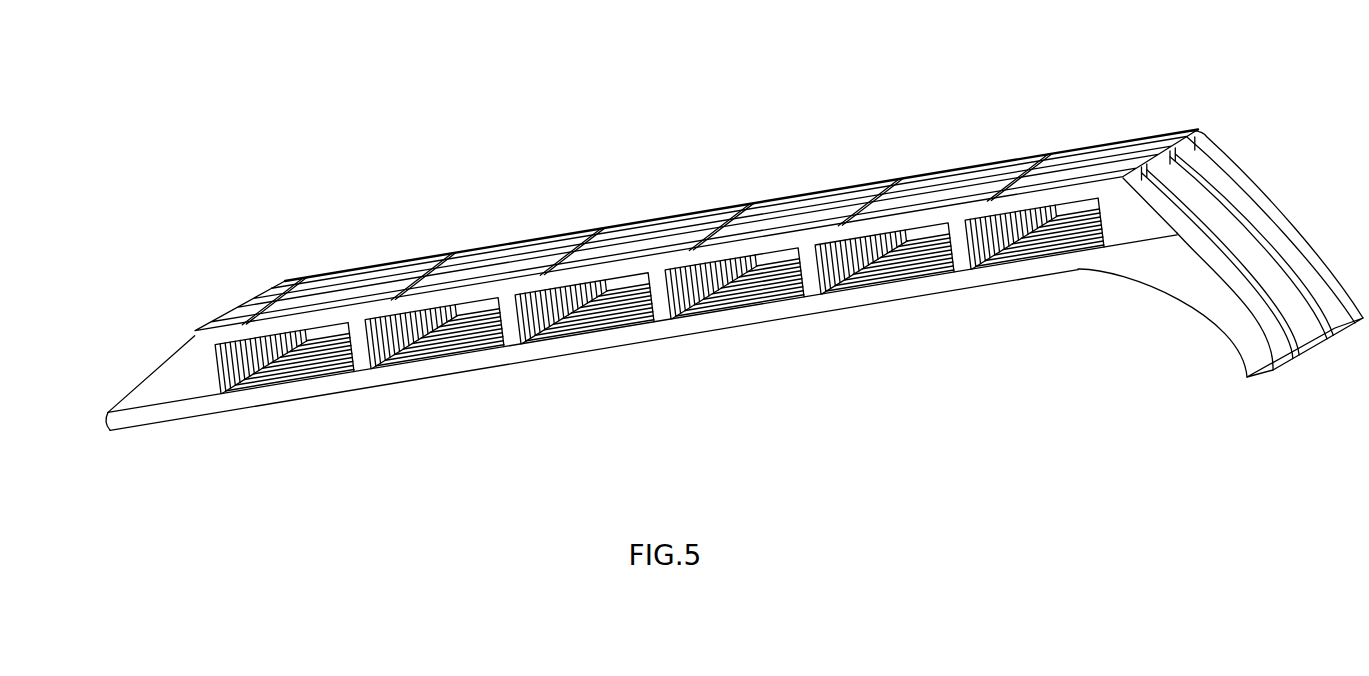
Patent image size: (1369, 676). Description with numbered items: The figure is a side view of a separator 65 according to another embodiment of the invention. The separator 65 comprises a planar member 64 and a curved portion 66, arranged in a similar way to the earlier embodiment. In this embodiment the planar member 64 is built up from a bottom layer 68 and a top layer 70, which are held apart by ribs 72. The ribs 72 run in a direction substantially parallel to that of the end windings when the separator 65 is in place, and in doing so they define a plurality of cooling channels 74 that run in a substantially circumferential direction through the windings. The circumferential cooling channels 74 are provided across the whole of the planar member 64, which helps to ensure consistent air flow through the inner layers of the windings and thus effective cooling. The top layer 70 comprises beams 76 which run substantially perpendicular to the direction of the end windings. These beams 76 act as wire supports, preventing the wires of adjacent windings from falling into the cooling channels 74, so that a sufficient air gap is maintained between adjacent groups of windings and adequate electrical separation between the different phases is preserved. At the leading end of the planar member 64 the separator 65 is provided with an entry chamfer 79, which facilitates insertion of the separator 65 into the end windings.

The planar member 64 is at (190, 376).
The separator 65 is at (700, 265).
The curved portion 66 is at (1327, 243).
The bottom layer 68 is at (440, 365).
The top layer 70 is at (334, 317).
The ribs 72 is at (510, 328).
The cooling channels 74 is at (747, 293).
The beams 76 is at (673, 232).
The entry chamfer 79 is at (138, 385).